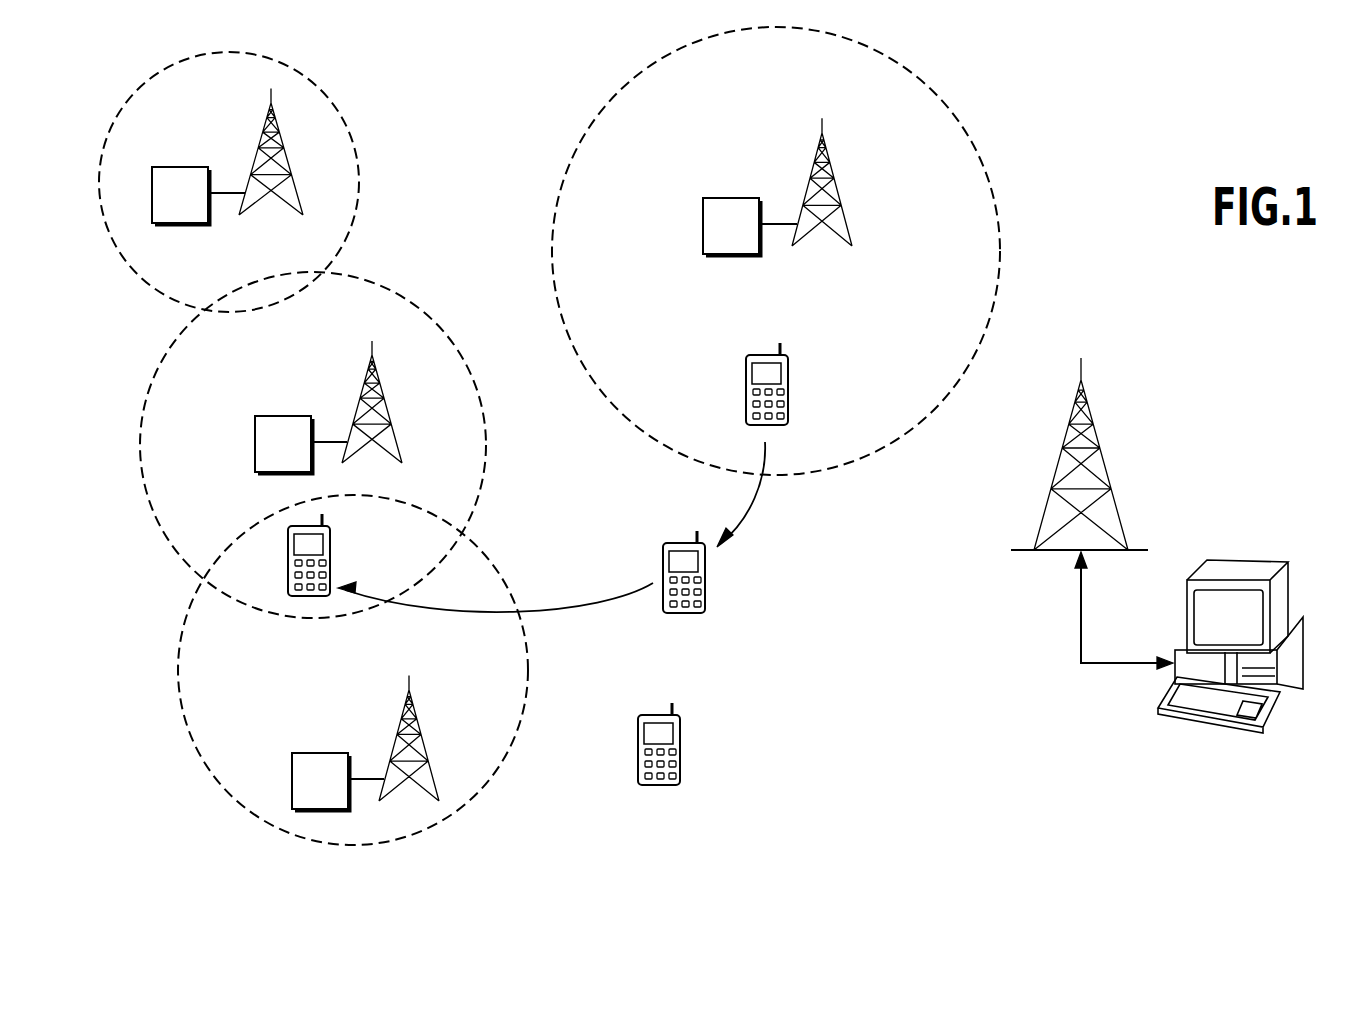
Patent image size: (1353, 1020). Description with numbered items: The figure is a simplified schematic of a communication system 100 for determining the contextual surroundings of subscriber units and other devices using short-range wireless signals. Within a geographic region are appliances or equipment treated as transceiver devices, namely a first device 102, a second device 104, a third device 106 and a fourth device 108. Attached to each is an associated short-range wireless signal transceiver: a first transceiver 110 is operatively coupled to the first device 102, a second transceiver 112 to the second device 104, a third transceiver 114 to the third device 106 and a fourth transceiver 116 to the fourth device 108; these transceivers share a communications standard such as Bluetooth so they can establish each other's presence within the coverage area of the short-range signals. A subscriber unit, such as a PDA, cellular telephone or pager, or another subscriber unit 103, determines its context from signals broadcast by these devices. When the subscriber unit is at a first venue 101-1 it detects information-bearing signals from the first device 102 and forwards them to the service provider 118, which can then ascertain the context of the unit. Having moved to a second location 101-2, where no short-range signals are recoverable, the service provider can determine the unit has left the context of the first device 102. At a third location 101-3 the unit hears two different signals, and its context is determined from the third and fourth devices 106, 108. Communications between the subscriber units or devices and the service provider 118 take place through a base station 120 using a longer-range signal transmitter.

The communication system 100 is at (1250, 341).
The subscriber unit at first venue 101-1 is at (790, 395).
The subscriber unit at second location 101-2 is at (708, 584).
The subscriber unit at third location 101-3 is at (332, 566).
The first device 102 is at (731, 197).
The subscriber unit 103 is at (682, 752).
The second device 104 is at (180, 166).
The third device 106 is at (284, 415).
The fourth device 108 is at (321, 752).
The first transceiver 110 is at (843, 205).
The second transceiver 112 is at (292, 176).
The third transceiver 114 is at (394, 426).
The fourth transceiver 116 is at (430, 762).
The service provider 118 is at (1249, 558).
The base station of service provider 120 is at (1106, 462).